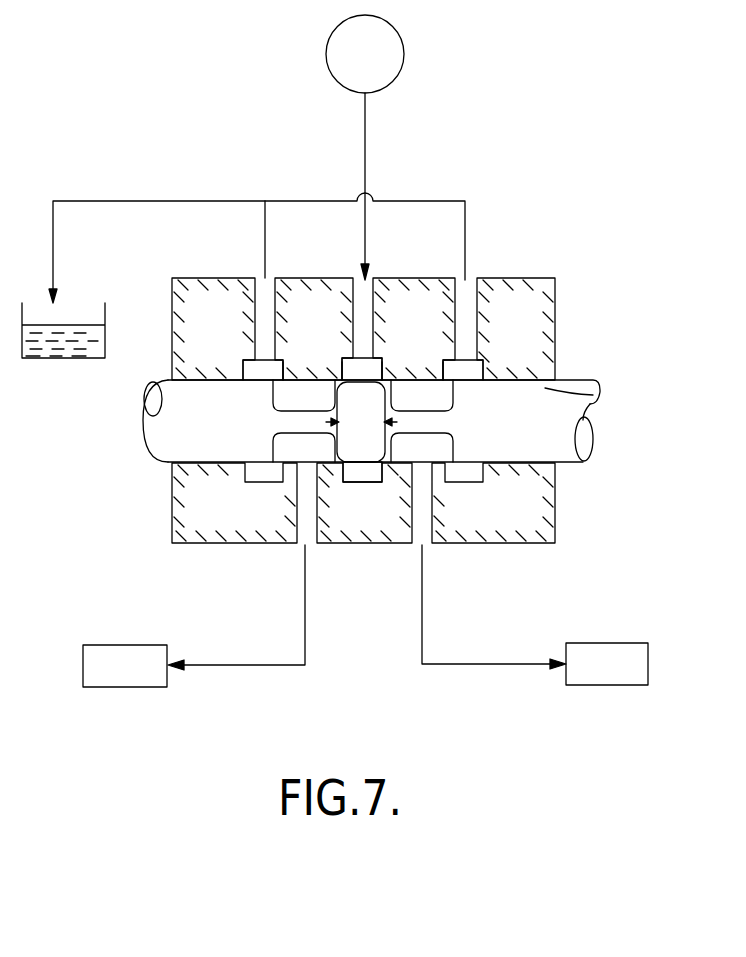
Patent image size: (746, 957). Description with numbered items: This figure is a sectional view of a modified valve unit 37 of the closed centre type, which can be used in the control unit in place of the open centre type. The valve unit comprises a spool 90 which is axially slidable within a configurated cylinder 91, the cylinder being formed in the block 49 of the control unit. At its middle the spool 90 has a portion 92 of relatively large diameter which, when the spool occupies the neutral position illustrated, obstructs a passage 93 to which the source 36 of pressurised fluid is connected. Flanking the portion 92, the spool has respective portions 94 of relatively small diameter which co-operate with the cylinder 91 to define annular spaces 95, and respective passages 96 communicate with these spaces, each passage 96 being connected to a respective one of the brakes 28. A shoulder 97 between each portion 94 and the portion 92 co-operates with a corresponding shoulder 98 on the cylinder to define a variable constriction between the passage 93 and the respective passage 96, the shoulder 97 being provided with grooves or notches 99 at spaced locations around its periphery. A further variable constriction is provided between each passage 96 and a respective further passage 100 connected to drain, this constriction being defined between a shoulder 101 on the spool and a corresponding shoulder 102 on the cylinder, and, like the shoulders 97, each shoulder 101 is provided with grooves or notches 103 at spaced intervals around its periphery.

The brake 28 is at (137, 672).
The source of pressurised fluid 36 is at (378, 47).
The valve unit 37 is at (566, 326).
The block 49 is at (555, 525).
The spool 90 is at (553, 450).
The configurated cylinder 91 is at (593, 395).
The portion of relatively large diameter 92 is at (372, 453).
The passage 93 is at (374, 307).
The portion of relatively small diameter 94 is at (305, 422).
The annular space 95 is at (318, 458).
The passage 96 is at (298, 506).
The shoulder 97 is at (338, 392).
The shoulder 98 is at (342, 368).
The grooves or notches 99 is at (327, 467).
The further passage 100 is at (260, 309).
The shoulder 101 is at (270, 396).
The shoulder 102 is at (283, 370).
The grooves or notches 103 is at (273, 462).